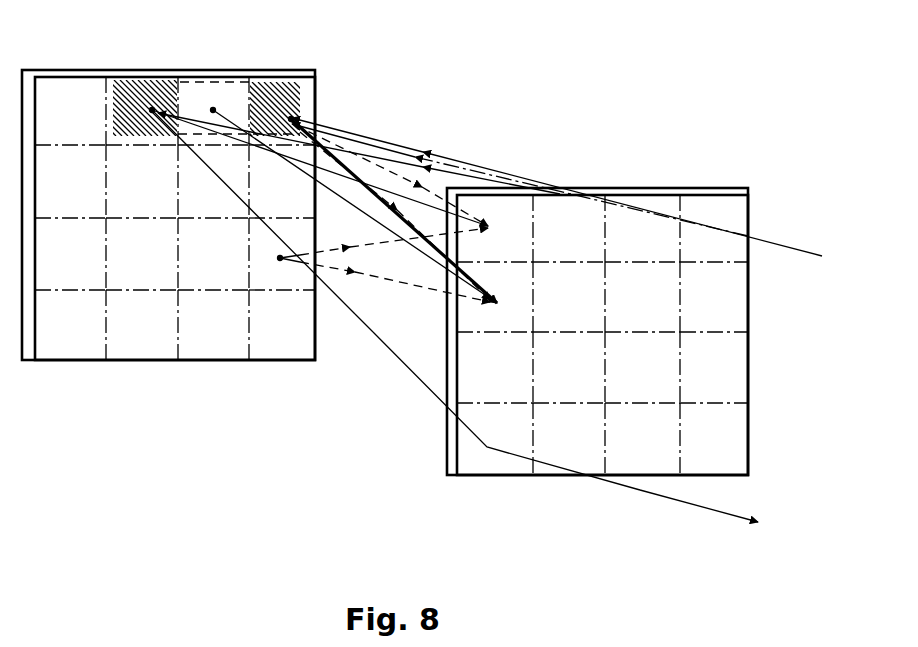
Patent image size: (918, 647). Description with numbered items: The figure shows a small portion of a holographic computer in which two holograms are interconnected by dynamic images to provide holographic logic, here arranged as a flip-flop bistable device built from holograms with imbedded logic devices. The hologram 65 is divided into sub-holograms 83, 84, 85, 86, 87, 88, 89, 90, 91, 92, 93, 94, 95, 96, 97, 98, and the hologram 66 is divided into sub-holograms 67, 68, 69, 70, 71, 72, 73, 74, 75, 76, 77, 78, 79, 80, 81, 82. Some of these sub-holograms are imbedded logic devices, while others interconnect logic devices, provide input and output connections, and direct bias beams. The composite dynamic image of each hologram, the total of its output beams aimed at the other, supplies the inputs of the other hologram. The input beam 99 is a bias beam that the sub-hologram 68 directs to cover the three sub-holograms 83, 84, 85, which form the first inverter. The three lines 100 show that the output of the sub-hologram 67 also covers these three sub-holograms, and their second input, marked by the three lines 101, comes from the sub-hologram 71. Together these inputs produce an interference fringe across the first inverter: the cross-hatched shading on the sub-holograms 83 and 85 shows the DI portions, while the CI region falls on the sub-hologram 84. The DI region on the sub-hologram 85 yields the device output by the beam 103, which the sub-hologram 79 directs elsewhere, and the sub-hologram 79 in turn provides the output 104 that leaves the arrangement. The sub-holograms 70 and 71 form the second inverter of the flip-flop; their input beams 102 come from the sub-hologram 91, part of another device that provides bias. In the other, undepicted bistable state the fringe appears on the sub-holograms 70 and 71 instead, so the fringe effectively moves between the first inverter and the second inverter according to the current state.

The hologram 65 is at (75, 72).
The hologram 66 is at (660, 190).
The sub-hologram 83 is at (262, 76).
The sub-hologram 84 is at (203, 86).
The sub-hologram 85 is at (140, 78).
The sub-hologram 86 is at (70, 111).
The sub-hologram 87 is at (70, 181).
The sub-hologram 88 is at (142, 181).
The sub-hologram 89 is at (213, 181).
The sub-hologram 90 is at (282, 204).
The sub-hologram 91 is at (282, 273).
The sub-hologram 92 is at (213, 254).
The sub-hologram 93 is at (142, 254).
The sub-hologram 94 is at (70, 254).
The sub-hologram 95 is at (79, 325).
The sub-hologram 96 is at (150, 325).
The sub-hologram 97 is at (221, 325).
The sub-hologram 98 is at (282, 327).
The sub-hologram 67 is at (714, 247).
The sub-hologram 68 is at (642, 228).
The sub-hologram 69 is at (569, 228).
The sub-hologram 70 is at (495, 228).
The sub-hologram 71 is at (495, 297).
The sub-hologram 72 is at (569, 297).
The sub-hologram 73 is at (642, 297).
The sub-hologram 74 is at (714, 307).
The sub-hologram 75 is at (714, 379).
The sub-hologram 76 is at (642, 367).
The sub-hologram 77 is at (569, 367).
The sub-hologram 78 is at (495, 367).
The sub-hologram 79 is at (510, 439).
The sub-hologram 80 is at (578, 439).
The sub-hologram 81 is at (652, 439).
The sub-hologram 82 is at (714, 432).
The input beam 99 is at (826, 258).
The three lines 100 is at (453, 170).
The three lines 101 is at (350, 204).
The input beams 102 is at (362, 245).
The beam 103 is at (370, 331).
The output 104 is at (725, 516).